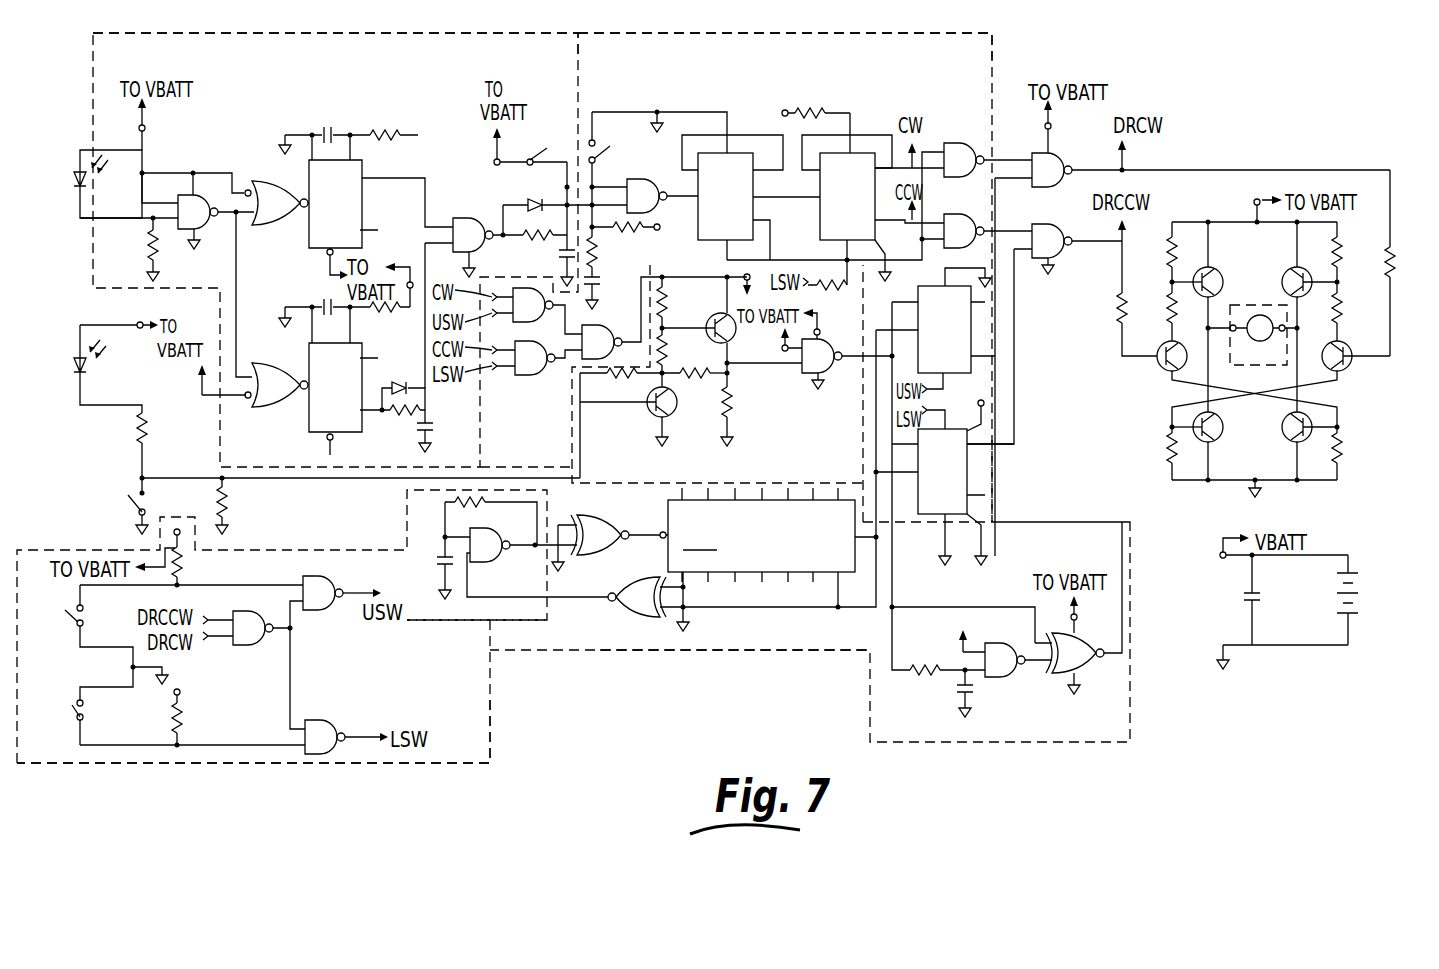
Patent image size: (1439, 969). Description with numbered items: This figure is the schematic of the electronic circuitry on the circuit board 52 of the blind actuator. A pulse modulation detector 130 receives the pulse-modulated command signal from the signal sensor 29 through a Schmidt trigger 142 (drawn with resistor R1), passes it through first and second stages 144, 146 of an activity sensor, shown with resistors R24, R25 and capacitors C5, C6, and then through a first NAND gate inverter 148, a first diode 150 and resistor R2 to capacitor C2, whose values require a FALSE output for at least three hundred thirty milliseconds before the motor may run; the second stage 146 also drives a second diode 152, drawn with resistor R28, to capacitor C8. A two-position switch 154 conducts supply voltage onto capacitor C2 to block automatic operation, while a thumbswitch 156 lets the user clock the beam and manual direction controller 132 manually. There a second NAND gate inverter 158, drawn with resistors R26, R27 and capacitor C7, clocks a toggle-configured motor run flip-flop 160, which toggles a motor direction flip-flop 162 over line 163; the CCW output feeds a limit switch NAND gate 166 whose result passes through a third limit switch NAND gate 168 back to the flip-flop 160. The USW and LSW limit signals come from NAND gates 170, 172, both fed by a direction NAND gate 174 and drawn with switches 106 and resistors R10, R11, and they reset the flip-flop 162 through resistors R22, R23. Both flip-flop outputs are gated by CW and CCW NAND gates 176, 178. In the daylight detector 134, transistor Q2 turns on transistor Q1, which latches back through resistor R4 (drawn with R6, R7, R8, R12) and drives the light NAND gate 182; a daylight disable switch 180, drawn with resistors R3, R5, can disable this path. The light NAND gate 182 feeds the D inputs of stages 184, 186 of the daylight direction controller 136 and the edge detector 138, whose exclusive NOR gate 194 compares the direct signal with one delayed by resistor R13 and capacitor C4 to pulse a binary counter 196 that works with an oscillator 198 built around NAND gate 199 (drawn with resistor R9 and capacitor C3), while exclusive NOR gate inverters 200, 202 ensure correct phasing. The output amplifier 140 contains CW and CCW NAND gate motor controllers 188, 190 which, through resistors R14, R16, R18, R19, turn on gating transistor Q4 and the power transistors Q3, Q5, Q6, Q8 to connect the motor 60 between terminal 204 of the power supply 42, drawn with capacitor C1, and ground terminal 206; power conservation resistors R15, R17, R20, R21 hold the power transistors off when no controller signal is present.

The signal sensor 29 is at (73, 183).
The circuit board 52 is at (1068, 42).
The motor 60 is at (1270, 313).
The limit switch 106 is at (70, 620).
The pulse modulation detector 130 is at (375, 10).
The beam and manual direction controller 132 is at (817, 33).
The daylight detector 134 is at (810, 463).
The daylight direction controller 136 is at (993, 476).
The edge detector 138 is at (637, 652).
The output amplifier 140 is at (1369, 178).
The Schmidt trigger 142 is at (178, 195).
The first stage of activity sensor 144 is at (364, 200).
The second stage of activity sensor 146 is at (307, 425).
The first NAND gate inverter 148 is at (473, 217).
The first diode 150 is at (532, 197).
The second diode 152 is at (391, 388).
The two-position switch 154 is at (535, 158).
The thumbswitch 156 is at (612, 145).
The second NAND gate inverter 158 is at (658, 180).
The motor run flip-flop 160 is at (710, 152).
The motor direction flip-flop 162 is at (863, 150).
The line 163 is at (782, 200).
The second limit switch NAND gate 166 is at (531, 376).
The third limit switch NAND gate 168 is at (604, 326).
The USW NAND gate 170 is at (332, 577).
The LSW NAND gate 172 is at (335, 722).
The direction NAND gate 174 is at (245, 645).
The flip-flop CW NAND gate 176 is at (946, 147).
The flip-flop CCW NAND gate 178 is at (947, 218).
The daylight disable switch 180 is at (130, 505).
The light NAND gate 182 is at (815, 375).
The first stage of daylight direction controller 184 is at (971, 338).
The second stage of daylight direction controller 186 is at (972, 440).
The CW NAND gate motor controller 188 is at (1068, 145).
The CCW NAND gate motor controller 190 is at (1060, 258).
The exclusive NOR gate 194 is at (1080, 675).
The binary counter 196 is at (772, 559).
The oscillator 198 is at (513, 622).
The NAND gate 199 is at (498, 562).
The first exclusive NOR gate inverter 200 is at (610, 520).
The second exclusive NOR gate inverter 202 is at (618, 618).
The terminal 204 is at (1254, 202).
The ground terminal 206 is at (1263, 495).
The power supply 42 is at (1358, 598).
The capacitor C1 is at (1230, 600).
The capacitor C2 is at (563, 253).
The capacitor C3 is at (441, 557).
The capacitor C4 is at (975, 698).
The capacitor C5 is at (325, 127).
The capacitor C6 is at (323, 300).
The capacitor C7 is at (600, 280).
The capacitor C8 is at (434, 428).
The resistor R1 is at (147, 247).
The resistor R2 is at (528, 240).
The resistor R3 is at (148, 420).
The resistor R4 is at (702, 378).
The resistor R5 is at (226, 500).
The resistor R6 is at (667, 297).
The resistor R7 is at (667, 348).
The resistor R8 is at (733, 400).
The resistor R9 is at (453, 503).
The resistor R10 is at (182, 567).
The resistor R11 is at (182, 727).
The resistor R12 is at (618, 378).
The resistor R13 is at (925, 673).
The resistor R14 is at (1119, 305).
The resistor R15 is at (1169, 256).
The resistor R16 is at (1168, 310).
The resistor R17 is at (1350, 252).
The resistor R18 is at (1393, 265).
The resistor R19 is at (1340, 310).
The resistor R20 is at (1170, 440).
The resistor R21 is at (1342, 445).
The resistor R22 is at (810, 110).
The resistor R23 is at (822, 290).
The resistor R24 is at (378, 130).
The resistor R25 is at (376, 309).
The resistor R26 is at (642, 229).
The resistor R27 is at (596, 248).
The resistor R28 is at (396, 434).
The transistor Q1 is at (735, 333).
The transistor Q2 is at (648, 415).
The CCW power transistor Q3 is at (1212, 270).
The CCW gating transistor Q4 is at (1159, 367).
The CW power transistor Q5 is at (1218, 437).
The CW power transistor Q6 is at (1290, 275).
The CCW power transistor Q8 is at (1295, 440).